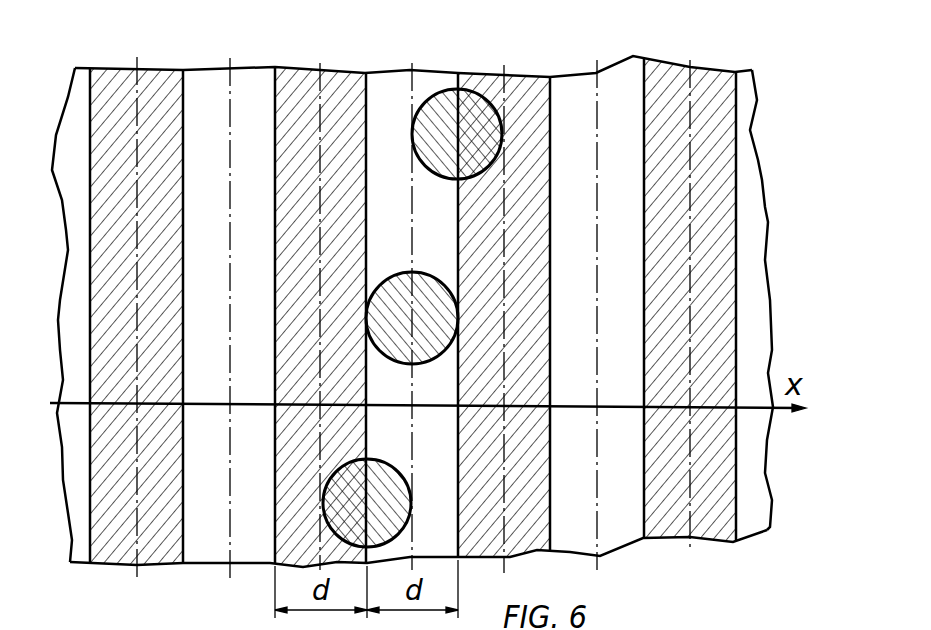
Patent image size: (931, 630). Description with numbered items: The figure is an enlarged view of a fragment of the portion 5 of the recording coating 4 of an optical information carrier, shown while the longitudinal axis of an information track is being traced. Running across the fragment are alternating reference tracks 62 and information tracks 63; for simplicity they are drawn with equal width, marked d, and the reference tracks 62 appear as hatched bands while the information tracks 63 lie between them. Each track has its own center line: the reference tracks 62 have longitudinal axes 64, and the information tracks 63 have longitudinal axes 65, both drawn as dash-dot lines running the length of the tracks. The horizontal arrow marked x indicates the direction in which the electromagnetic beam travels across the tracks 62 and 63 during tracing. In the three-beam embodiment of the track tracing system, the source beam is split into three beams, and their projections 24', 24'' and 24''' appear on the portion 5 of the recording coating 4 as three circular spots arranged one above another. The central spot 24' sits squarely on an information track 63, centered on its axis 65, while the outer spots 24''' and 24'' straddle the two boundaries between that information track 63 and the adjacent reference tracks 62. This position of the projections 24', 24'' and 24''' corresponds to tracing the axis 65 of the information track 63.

The recording coating 4 is at (760, 169).
The portion of the recording coating 5 is at (770, 219).
The reference tracks 62 is at (163, 82).
The information tracks 63 is at (254, 83).
The longitudinal axis of reference track 64 is at (137, 230).
The longitudinal axis of information track 65 is at (230, 213).
The electromagnetic beam projection 24' is at (415, 297).
The electromagnetic beam projection 24'' is at (370, 492).
The electromagnetic beam projection 24''' is at (460, 162).